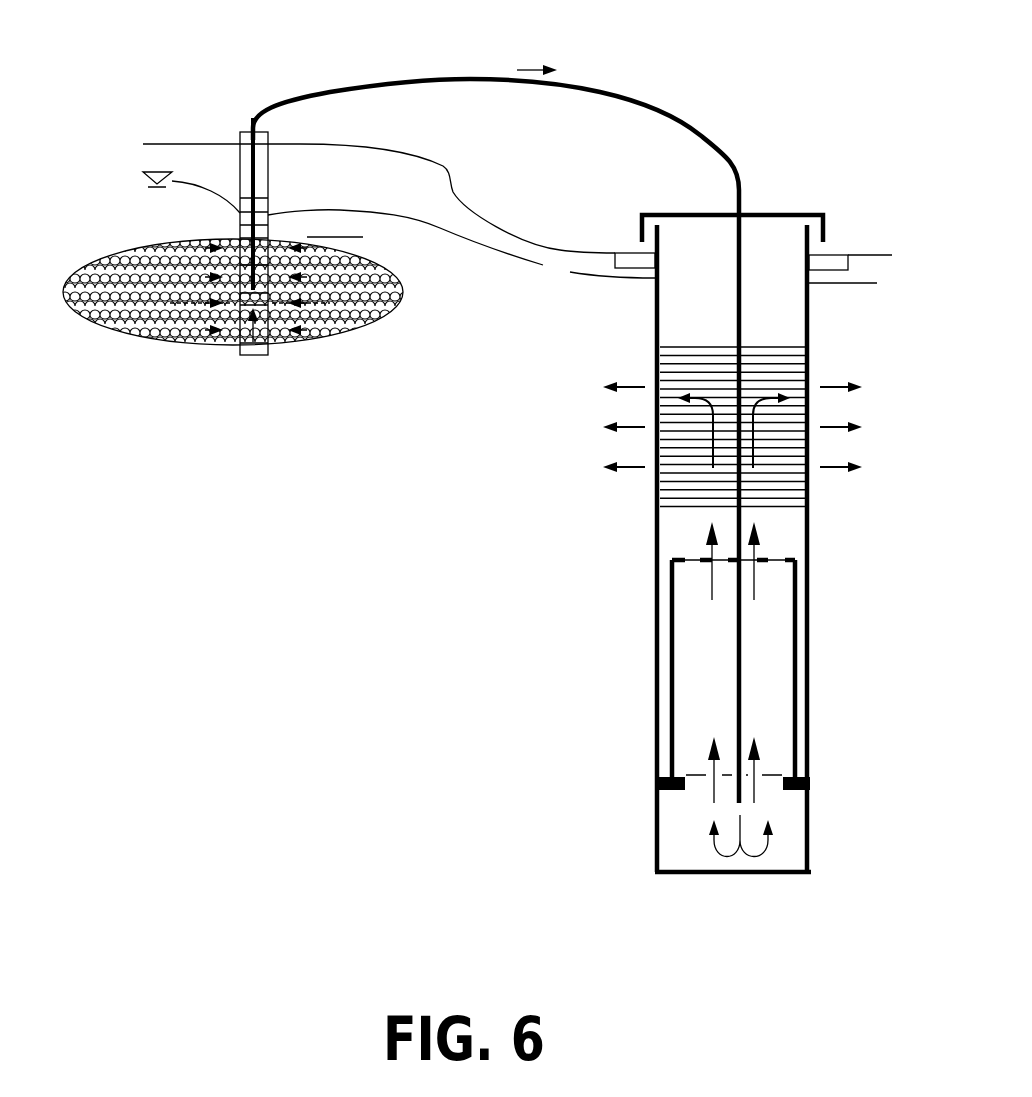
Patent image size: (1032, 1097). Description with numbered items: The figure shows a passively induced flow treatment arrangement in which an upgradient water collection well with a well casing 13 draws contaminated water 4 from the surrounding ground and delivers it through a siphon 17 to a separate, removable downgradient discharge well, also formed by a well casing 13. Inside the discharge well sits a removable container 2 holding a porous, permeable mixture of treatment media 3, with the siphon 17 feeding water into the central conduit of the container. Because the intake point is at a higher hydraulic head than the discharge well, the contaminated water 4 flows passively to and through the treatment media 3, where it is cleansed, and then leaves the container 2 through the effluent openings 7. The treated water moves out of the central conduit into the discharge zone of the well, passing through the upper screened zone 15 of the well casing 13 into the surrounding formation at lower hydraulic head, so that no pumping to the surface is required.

The container 2 is at (797, 675).
The treatment media 3 is at (695, 676).
The water 4 is at (350, 327).
The effluent openings 7 is at (670, 792).
The well casing 13 is at (245, 363).
The upper screened zone 15 is at (676, 368).
The siphon 17 is at (457, 78).